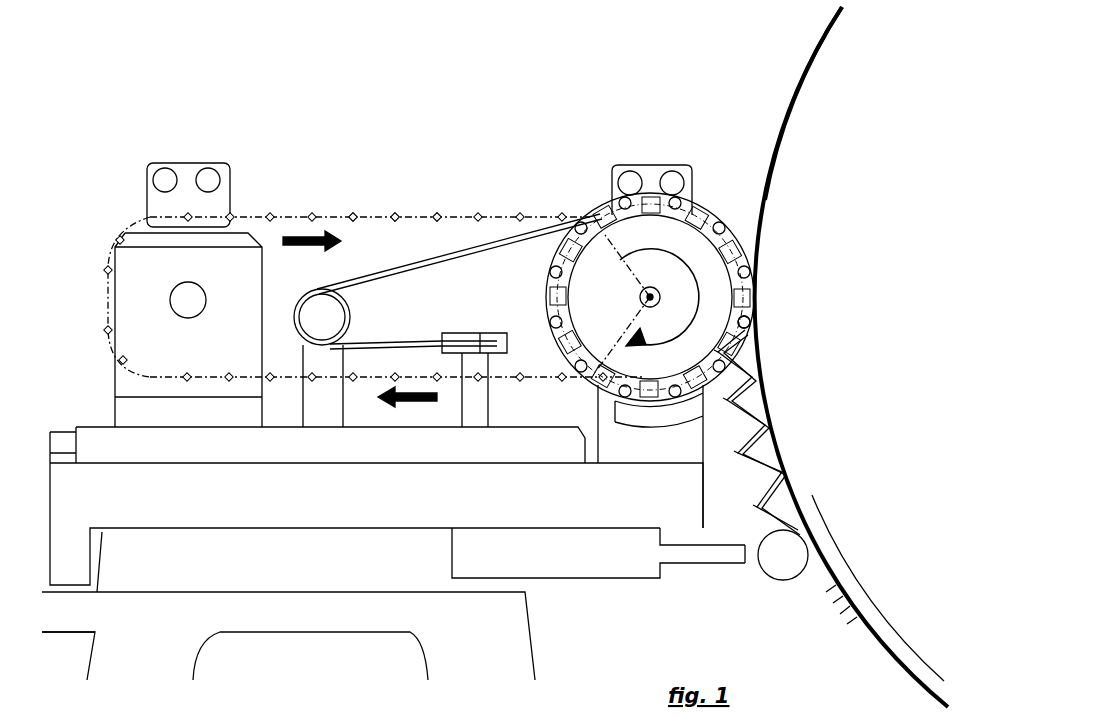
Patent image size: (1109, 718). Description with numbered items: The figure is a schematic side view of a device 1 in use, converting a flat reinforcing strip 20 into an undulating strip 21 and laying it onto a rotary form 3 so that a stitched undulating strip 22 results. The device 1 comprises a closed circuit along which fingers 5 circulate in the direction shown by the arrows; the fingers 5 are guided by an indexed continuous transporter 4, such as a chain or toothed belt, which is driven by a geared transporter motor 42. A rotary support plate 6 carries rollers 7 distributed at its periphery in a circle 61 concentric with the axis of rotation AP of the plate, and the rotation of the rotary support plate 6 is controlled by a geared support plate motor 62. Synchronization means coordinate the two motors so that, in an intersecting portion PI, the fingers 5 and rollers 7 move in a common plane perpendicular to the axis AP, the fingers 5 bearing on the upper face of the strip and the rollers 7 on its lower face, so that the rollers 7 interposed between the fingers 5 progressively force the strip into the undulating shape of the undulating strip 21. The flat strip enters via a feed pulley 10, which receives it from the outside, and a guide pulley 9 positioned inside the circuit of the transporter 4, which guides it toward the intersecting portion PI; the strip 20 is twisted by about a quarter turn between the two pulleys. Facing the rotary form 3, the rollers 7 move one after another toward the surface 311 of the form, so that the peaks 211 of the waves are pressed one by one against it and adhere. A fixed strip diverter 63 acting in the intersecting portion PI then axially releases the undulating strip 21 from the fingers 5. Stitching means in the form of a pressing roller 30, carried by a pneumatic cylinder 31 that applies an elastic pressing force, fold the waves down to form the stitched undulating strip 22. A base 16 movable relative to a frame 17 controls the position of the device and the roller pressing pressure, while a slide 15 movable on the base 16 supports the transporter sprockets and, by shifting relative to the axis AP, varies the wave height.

The device 1 is at (266, 78).
The rotary form 3 is at (851, 357).
The surface of the form 311 is at (778, 133).
The indexed continuous transporter 4 is at (290, 213).
The geared transporter motor 42 is at (157, 205).
The fingers 5 is at (437, 214).
The flat reinforcing strip 20 is at (433, 338).
The rollers 7 is at (543, 322).
The rotary support plate 6 is at (602, 205).
The intersecting portion PI is at (663, 250).
The axis of rotation of the rotary support plate AP is at (648, 298).
The geared support plate motor 62 is at (690, 172).
The circle 61 is at (712, 200).
The fixed strip diverter 63 is at (728, 322).
The guide pulley 9 is at (318, 316).
The feed pulley 10 is at (462, 333).
The slide 15 is at (317, 445).
The base 16 is at (372, 571).
The frame 17 is at (268, 638).
The pneumatic cylinder 31 is at (603, 560).
The stitching means / pressing roller 30 is at (778, 565).
The stitched undulating strip 22 is at (840, 605).
The undulating strip 21 is at (740, 410).
The peaks of the waves 211 is at (762, 325).